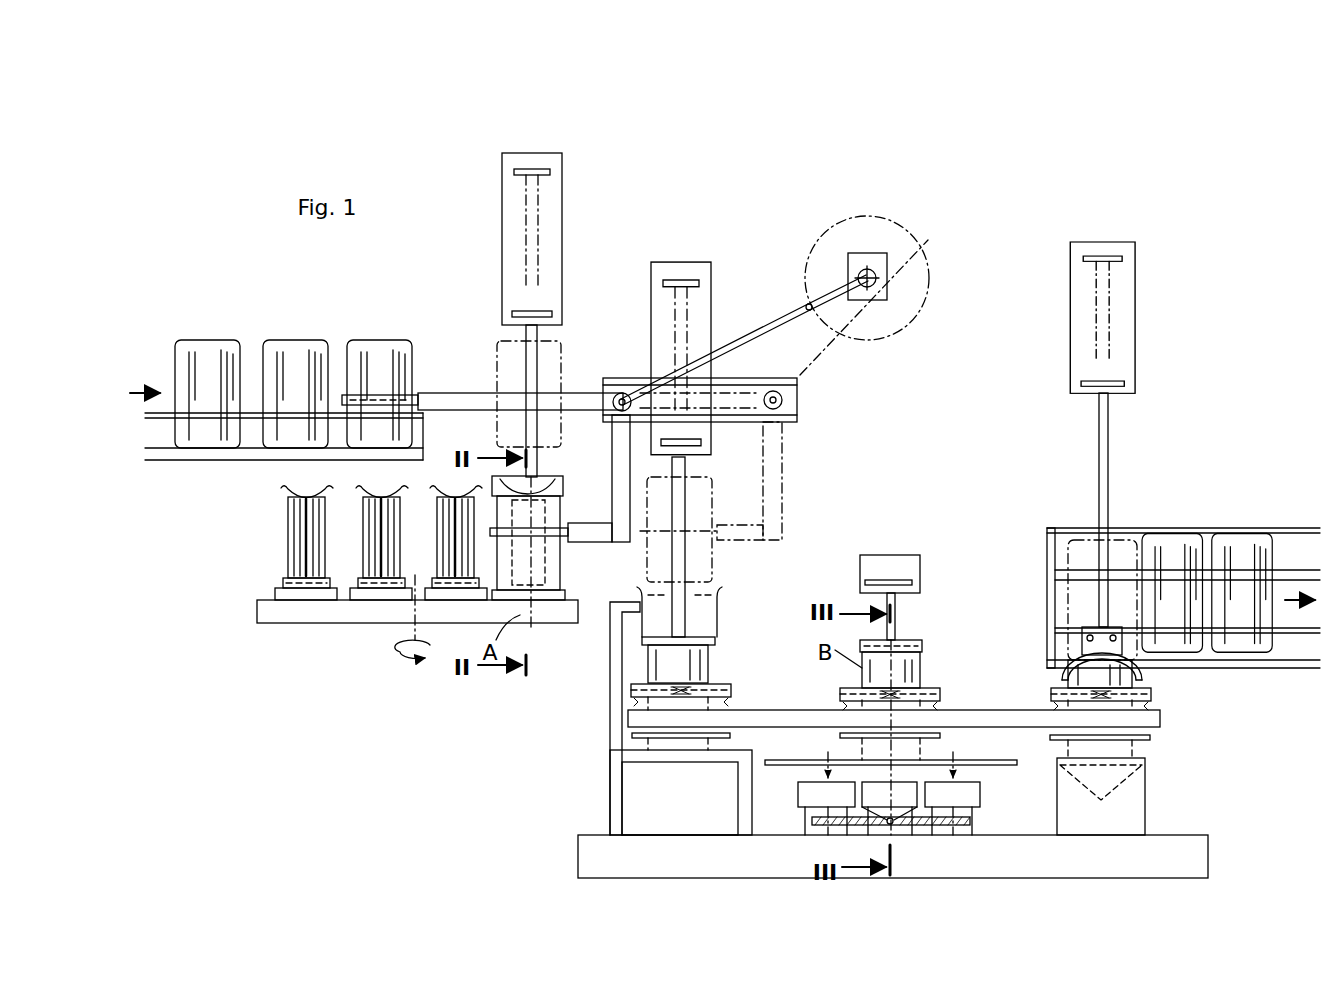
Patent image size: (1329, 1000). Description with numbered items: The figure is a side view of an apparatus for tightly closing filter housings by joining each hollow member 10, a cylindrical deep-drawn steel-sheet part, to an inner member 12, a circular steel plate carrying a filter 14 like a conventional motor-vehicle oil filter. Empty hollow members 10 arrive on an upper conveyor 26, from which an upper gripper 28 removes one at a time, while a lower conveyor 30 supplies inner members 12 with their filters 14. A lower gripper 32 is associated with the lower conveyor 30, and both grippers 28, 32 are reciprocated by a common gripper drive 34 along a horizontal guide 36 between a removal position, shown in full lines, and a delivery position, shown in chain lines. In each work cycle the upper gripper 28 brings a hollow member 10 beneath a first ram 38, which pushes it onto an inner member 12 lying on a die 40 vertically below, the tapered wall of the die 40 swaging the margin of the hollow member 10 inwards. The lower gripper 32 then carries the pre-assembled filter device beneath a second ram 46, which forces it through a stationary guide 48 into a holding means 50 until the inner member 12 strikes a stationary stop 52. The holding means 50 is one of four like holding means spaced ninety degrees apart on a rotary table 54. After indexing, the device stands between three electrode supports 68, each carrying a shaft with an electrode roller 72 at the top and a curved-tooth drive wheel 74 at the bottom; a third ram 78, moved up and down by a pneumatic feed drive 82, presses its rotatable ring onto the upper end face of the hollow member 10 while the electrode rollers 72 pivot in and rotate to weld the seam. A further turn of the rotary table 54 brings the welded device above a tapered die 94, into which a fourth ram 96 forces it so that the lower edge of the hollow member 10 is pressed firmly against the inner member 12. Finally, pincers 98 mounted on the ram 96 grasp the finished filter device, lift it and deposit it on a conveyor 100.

The hollow member 10 is at (388, 347).
The inner member 12 is at (367, 600).
The filter 14 is at (380, 538).
The upper conveyor 26 is at (208, 450).
The upper gripper 28 is at (460, 398).
The lower conveyor 30 is at (378, 625).
The lower gripper 32 is at (588, 545).
The gripper drive 34 is at (877, 262).
The horizontal guide 36 is at (793, 410).
The first ram 38 is at (560, 478).
The die 40 is at (548, 598).
The second ram 46 is at (695, 635).
The stationary guide 48 is at (720, 640).
The holding means 50 is at (740, 684).
The stationary stop 52 is at (635, 757).
The rotary table 54 is at (760, 720).
The electrode support 68 is at (802, 795).
The electrode roller 72 is at (800, 763).
The drive wheel 74 is at (812, 825).
The third ram 78 is at (905, 648).
The feed drive 82 is at (915, 565).
The tapered die 94 is at (1135, 793).
The fourth ram 96 is at (1100, 655).
The pincers 98 is at (1062, 645).
The conveyor 100 is at (1245, 663).